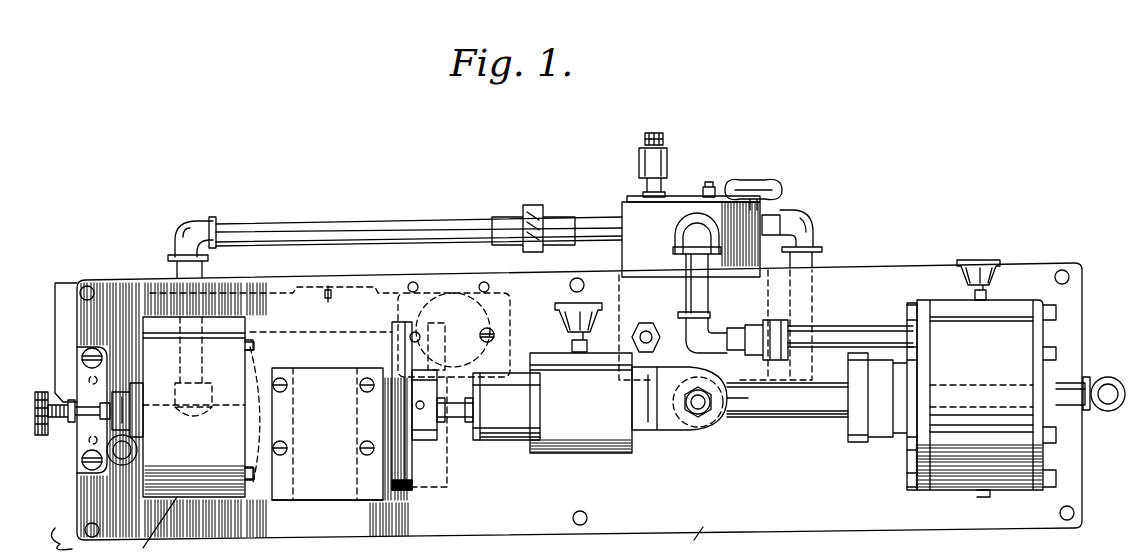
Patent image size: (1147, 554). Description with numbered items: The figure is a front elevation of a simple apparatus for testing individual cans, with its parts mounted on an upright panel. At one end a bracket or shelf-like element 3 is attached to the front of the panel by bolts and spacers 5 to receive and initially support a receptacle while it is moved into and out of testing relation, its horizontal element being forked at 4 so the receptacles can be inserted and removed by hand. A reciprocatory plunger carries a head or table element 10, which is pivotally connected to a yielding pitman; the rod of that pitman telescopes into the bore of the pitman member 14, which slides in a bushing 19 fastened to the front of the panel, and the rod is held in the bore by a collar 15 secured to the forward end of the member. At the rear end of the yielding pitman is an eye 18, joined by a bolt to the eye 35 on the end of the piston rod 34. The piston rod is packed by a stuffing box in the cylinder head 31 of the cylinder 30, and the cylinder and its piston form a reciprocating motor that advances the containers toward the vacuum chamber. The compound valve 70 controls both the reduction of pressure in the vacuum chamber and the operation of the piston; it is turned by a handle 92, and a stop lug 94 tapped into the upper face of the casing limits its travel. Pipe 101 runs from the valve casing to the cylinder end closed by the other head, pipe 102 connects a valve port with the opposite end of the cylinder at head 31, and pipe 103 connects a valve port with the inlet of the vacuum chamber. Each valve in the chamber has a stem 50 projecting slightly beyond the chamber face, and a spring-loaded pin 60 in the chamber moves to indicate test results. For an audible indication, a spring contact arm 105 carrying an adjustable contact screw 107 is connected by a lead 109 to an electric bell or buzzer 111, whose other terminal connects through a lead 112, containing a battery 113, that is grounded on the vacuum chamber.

The bracket or shelf-like element 3 is at (327, 434).
The forked horizontal element 4 is at (292, 502).
The bolts and spacers 5 is at (290, 385).
The head or table element 10 is at (412, 490).
The pitman member 14 is at (521, 441).
The collar 15 is at (477, 441).
The eye 18 is at (683, 430).
The bushing 19 is at (603, 453).
The cylinder 30 is at (967, 490).
The cylinder head 31 is at (880, 438).
The piston rod 34 is at (780, 418).
The eye 35 is at (730, 415).
The valve stem 50 is at (255, 345).
The pin 60 is at (201, 407).
The compound valve 70 is at (691, 205).
The handle 92 is at (755, 180).
The stop lug 94 is at (712, 185).
The pipe 101 is at (1072, 390).
The pipe 102 is at (838, 330).
The pipe 103 is at (432, 224).
The spring contact arm 105 is at (83, 450).
The adjustable contact screw 107 is at (58, 423).
The lead 109 is at (55, 357).
The electric bell or buzzer 111 is at (452, 303).
The lead 112 is at (320, 293).
The battery 113 is at (335, 296).